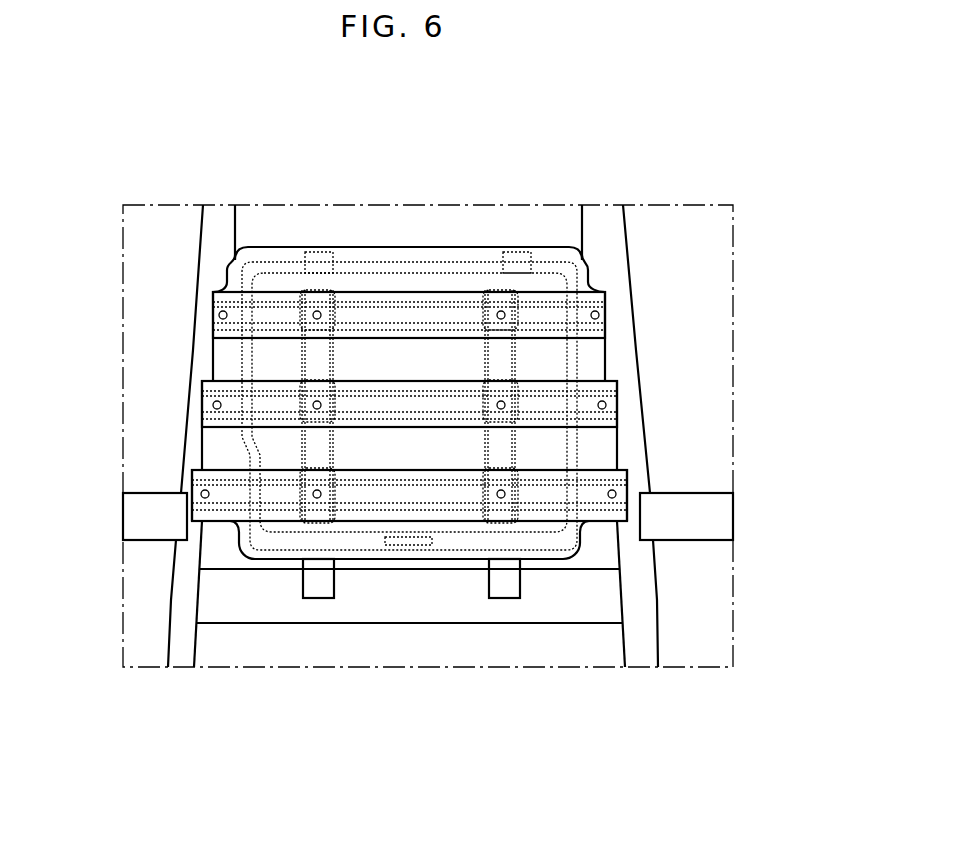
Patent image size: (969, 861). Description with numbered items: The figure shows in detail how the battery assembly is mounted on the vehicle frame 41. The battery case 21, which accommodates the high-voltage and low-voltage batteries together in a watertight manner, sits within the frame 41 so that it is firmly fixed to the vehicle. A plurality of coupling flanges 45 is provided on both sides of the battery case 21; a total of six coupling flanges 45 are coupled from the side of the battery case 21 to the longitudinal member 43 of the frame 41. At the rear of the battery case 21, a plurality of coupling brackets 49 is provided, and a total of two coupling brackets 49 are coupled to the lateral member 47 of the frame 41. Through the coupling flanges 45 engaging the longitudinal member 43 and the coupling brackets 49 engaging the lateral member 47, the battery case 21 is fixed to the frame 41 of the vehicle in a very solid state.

The battery case 21 is at (403, 247).
The frame 41 is at (466, 439).
The longitudinal member 43 is at (212, 437).
The coupling flange 45 is at (217, 312).
The lateral member 47 is at (599, 583).
The coupling bracket 49 is at (315, 590).